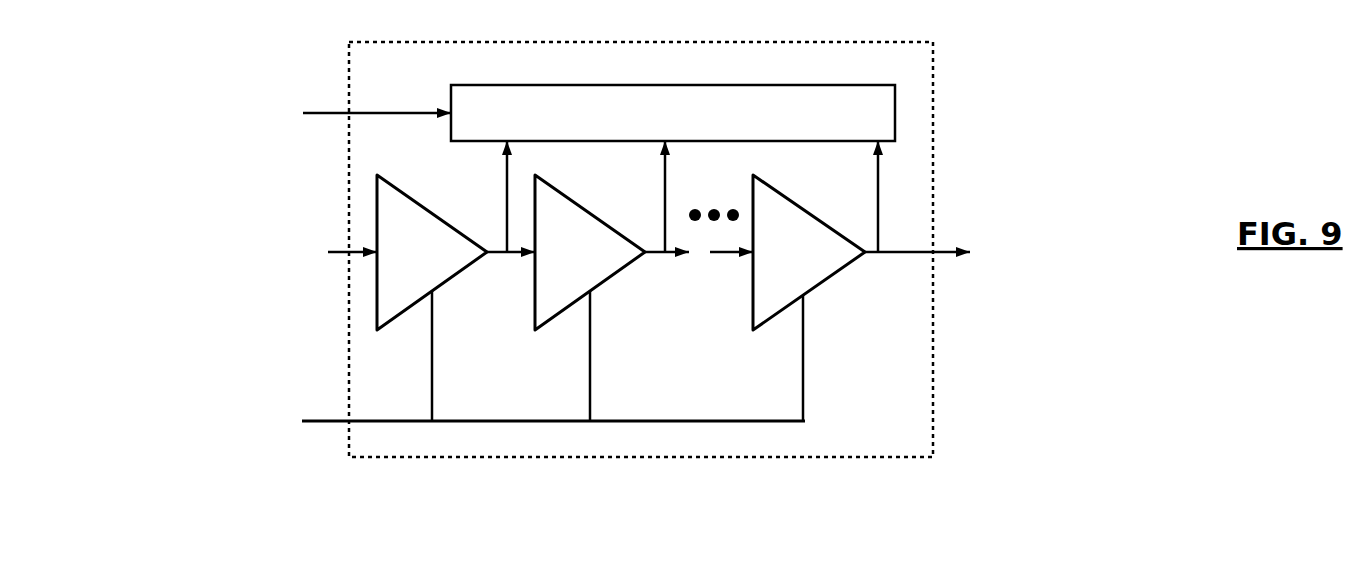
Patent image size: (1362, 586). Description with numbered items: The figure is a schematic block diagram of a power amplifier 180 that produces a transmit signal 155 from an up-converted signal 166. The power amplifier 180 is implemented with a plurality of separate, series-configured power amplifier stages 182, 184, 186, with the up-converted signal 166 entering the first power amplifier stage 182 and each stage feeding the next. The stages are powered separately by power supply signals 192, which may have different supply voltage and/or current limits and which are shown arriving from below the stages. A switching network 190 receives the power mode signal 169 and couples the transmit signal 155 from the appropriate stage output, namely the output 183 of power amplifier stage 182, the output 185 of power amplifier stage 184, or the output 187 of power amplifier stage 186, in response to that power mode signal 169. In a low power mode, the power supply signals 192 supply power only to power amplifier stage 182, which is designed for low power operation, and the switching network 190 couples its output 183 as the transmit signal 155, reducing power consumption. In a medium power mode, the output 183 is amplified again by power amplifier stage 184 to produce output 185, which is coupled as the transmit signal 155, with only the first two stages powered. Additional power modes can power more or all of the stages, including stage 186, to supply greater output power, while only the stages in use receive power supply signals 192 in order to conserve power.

The transmit signal 155 is at (980, 248).
The up-converted signal 166 is at (283, 252).
The power mode signal 169 is at (297, 113).
The power amplifier 180 is at (641, 249).
The power amplifier stage 182 is at (456, 298).
The output of power amplifier stage 183 is at (507, 215).
The power amplifier stage 184 is at (612, 298).
The output of power amplifier stage 185 is at (665, 215).
The power amplifier stage 186 is at (809, 298).
The output of power amplifier stage 187 is at (878, 215).
The switching network 190 is at (673, 113).
The power supply signals 192 is at (478, 430).